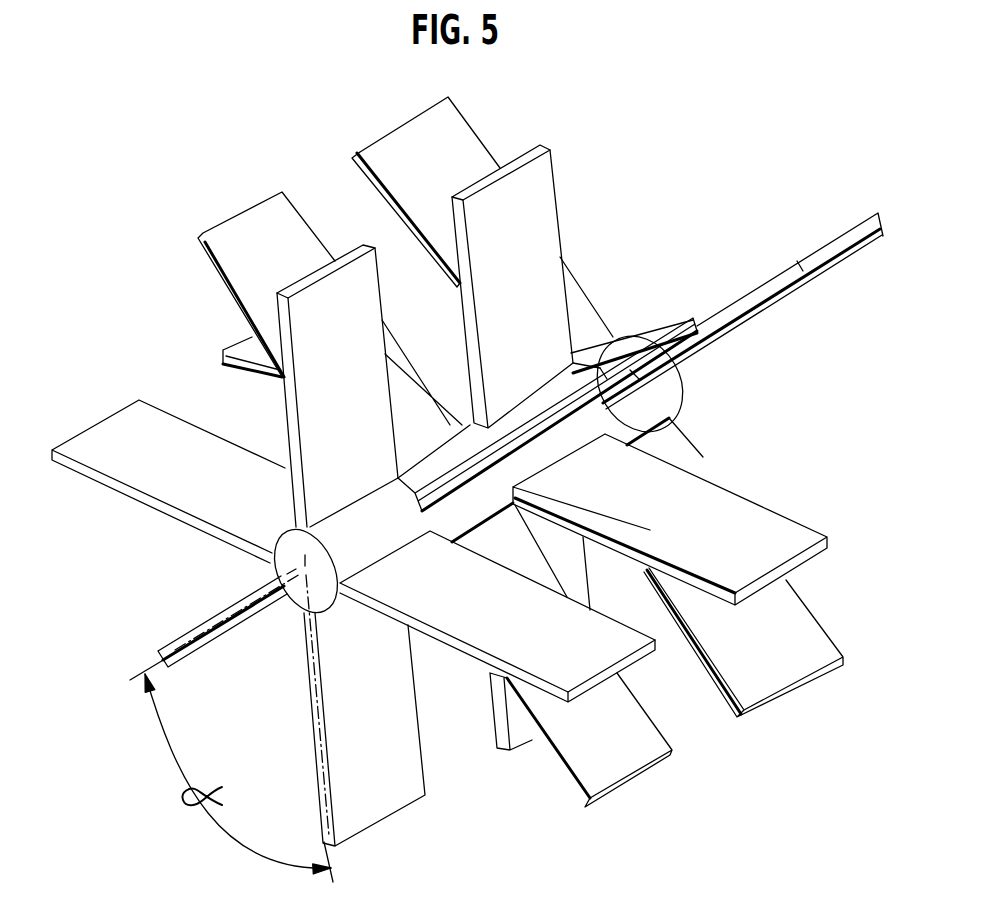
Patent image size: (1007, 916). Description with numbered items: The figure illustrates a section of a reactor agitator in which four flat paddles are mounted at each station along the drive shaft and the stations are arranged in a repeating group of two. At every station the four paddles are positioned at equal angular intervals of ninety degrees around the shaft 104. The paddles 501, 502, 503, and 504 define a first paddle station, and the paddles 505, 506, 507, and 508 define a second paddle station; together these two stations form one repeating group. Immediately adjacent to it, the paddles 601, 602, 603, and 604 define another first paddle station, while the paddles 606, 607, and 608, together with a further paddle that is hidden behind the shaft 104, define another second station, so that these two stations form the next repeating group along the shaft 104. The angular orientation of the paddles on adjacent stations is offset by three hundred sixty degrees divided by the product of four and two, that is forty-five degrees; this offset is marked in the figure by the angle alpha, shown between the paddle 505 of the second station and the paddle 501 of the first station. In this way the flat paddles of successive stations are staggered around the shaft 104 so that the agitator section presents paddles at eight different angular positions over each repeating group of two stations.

The shaft 104 is at (625, 342).
The paddle 501 is at (380, 822).
The paddle 502 is at (139, 400).
The paddle 503 is at (288, 436).
The paddle 504 is at (655, 652).
The paddle 505 is at (192, 628).
The paddle 506 is at (241, 212).
The paddle 507 is at (668, 387).
The paddle 508 is at (650, 772).
The paddle 601 is at (498, 749).
The paddle 602 is at (233, 347).
The paddle 603 is at (553, 186).
The paddle 604 is at (773, 525).
The paddle 606 is at (370, 145).
The paddle 607 is at (817, 246).
The paddle 608 is at (800, 687).